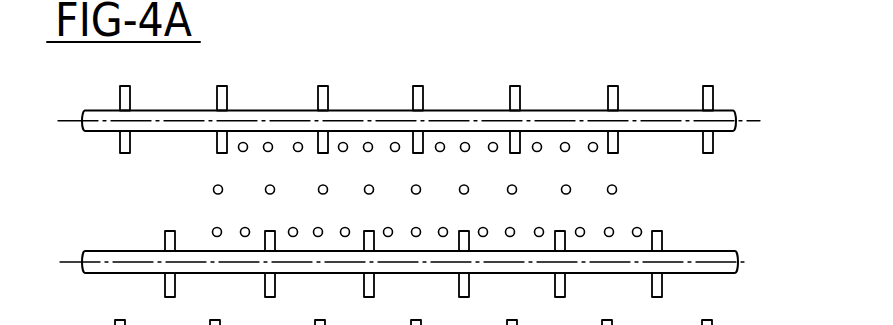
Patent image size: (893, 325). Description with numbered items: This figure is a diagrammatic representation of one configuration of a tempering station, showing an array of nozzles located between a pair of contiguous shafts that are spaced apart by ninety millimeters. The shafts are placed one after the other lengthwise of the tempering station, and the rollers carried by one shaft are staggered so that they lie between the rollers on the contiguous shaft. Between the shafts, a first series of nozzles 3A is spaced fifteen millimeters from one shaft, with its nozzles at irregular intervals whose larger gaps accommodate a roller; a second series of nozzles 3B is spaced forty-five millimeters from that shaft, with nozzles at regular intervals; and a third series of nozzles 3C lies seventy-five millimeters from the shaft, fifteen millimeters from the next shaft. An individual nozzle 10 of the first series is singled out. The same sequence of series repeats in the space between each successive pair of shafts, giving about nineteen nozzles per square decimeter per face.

The first series of nozzles 3A is at (387, 145).
The second series of nozzles 3B is at (398, 183).
The third series of nozzles 3C is at (396, 225).
The hole 10 is at (491, 142).